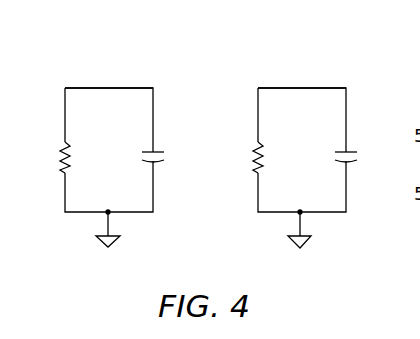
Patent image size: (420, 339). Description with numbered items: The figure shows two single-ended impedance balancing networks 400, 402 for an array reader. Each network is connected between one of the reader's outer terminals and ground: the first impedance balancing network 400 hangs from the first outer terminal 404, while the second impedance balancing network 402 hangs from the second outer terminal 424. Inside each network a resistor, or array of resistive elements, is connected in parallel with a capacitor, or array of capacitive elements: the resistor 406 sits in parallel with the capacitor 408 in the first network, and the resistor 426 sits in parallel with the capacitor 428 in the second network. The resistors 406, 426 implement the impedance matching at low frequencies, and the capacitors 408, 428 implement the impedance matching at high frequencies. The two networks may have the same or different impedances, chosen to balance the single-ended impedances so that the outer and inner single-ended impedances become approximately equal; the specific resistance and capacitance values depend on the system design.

The impedance balancing network 400 is at (131, 50).
The impedance balancing network 402 is at (324, 50).
The outer terminal HRPA 404 is at (72, 86).
The resistor 406 is at (65, 142).
The capacitor 408 is at (157, 147).
The outer terminal HRNC 424 is at (265, 86).
The resistor 426 is at (258, 142).
The capacitor 428 is at (349, 147).